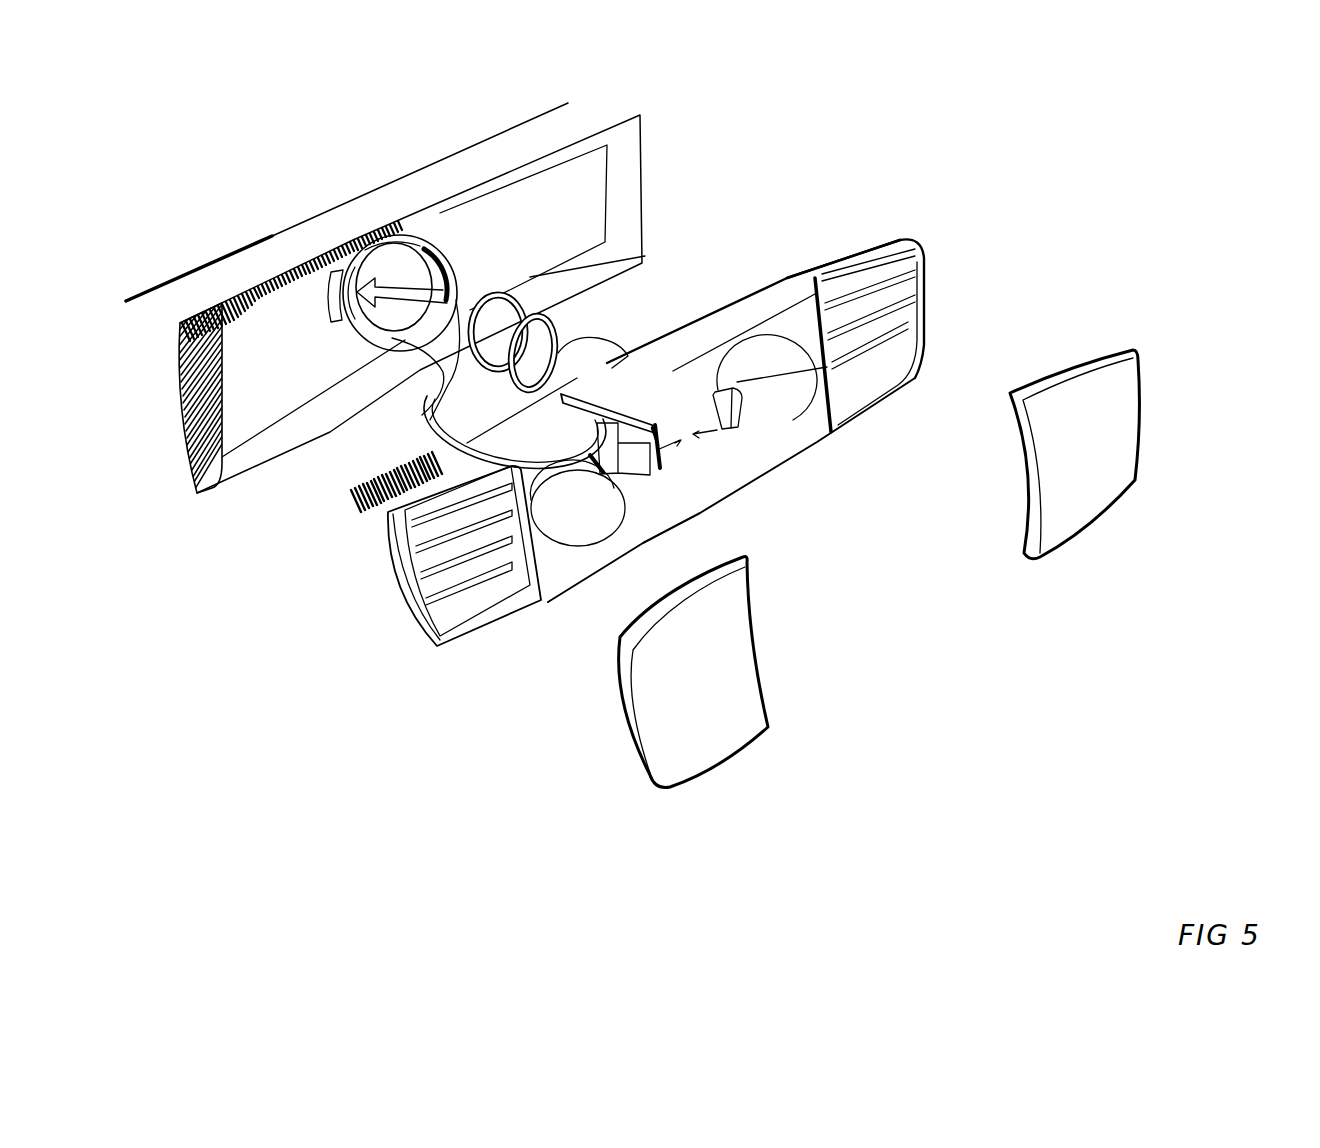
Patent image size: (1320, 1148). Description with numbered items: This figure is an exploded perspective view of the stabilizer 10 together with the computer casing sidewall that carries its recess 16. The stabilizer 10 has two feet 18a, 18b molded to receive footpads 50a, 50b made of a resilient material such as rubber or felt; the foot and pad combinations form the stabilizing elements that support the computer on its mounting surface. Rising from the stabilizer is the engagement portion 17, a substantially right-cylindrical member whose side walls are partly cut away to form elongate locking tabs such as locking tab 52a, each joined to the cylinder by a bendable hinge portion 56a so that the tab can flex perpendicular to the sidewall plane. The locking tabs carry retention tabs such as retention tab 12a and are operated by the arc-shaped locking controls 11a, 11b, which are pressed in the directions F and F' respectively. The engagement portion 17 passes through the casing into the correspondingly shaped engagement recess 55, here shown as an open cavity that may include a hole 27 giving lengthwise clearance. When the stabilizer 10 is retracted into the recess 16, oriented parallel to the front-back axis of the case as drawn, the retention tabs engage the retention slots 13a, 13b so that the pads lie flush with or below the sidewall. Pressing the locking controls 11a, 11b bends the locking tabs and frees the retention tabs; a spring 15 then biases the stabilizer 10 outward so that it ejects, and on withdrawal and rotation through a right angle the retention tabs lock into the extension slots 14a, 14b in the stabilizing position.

The stabilizer 10 is at (911, 194).
The recess 16 is at (541, 195).
The hole 27 is at (392, 268).
The engagement recess 55 is at (443, 278).
The retention slot 13b is at (432, 275).
The extension slot 14a is at (390, 242).
The retention slot 13a is at (328, 308).
The extension slot 14b is at (420, 340).
The spring 15 is at (551, 319).
The engagement portion 17 is at (607, 350).
The retention tab 12a is at (613, 412).
The bendable hinge portion 56a is at (572, 413).
The locking tab 52a is at (600, 473).
The locking control 11a is at (638, 457).
The locking control 11b is at (742, 410).
The foot 18a is at (460, 570).
The foot 18b is at (915, 310).
The footpad 50a is at (722, 720).
The footpad 50b is at (1113, 473).